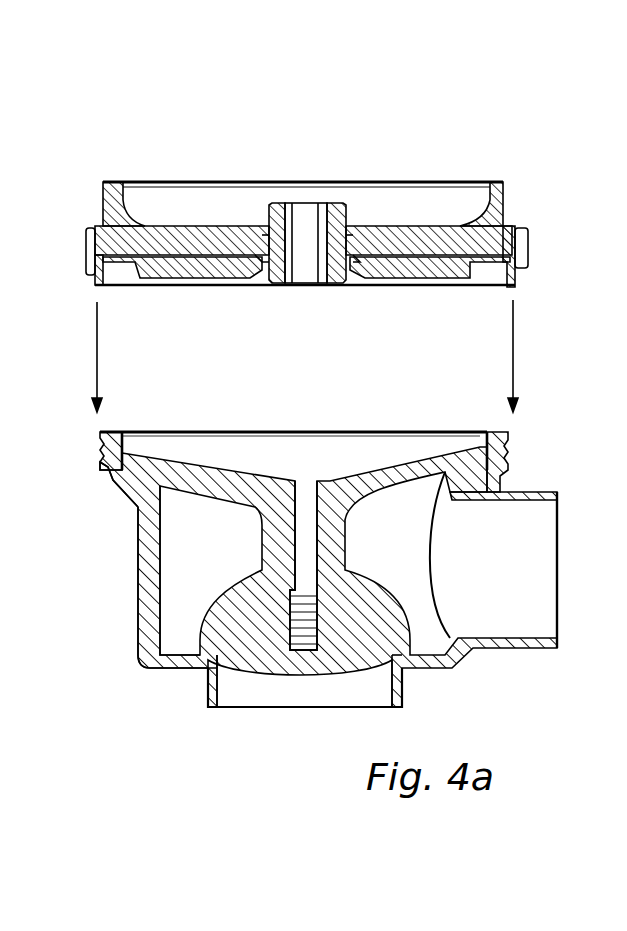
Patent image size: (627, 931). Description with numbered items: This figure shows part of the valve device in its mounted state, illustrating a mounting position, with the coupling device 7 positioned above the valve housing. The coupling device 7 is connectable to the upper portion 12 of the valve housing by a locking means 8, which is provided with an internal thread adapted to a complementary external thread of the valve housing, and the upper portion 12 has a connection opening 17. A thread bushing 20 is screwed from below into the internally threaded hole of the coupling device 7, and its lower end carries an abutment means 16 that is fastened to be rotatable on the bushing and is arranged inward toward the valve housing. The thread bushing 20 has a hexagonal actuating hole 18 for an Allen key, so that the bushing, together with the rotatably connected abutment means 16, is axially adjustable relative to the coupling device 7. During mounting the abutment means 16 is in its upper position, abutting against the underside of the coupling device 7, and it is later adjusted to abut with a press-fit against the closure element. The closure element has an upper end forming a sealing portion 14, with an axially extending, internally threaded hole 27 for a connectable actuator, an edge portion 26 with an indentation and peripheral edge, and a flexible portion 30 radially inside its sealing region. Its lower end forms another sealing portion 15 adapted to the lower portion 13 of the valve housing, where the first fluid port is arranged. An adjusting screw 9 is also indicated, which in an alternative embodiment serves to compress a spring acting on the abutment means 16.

The coupling device 7 is at (542, 187).
The locking means 8 is at (526, 258).
The adjusting screw 9 is at (162, 274).
The upper portion 12 is at (112, 447).
The lower portion 13 is at (196, 680).
The sealing portion 14 is at (508, 456).
The sealing portion 15 is at (228, 705).
The abutment means 16 is at (127, 495).
The connection opening 17 is at (252, 432).
The hexagonal actuating hole 18 is at (312, 218).
The thread bushing 20 is at (278, 212).
The edge portion 26 is at (450, 470).
The hole 27 is at (306, 512).
The flexible portion 30 is at (412, 510).